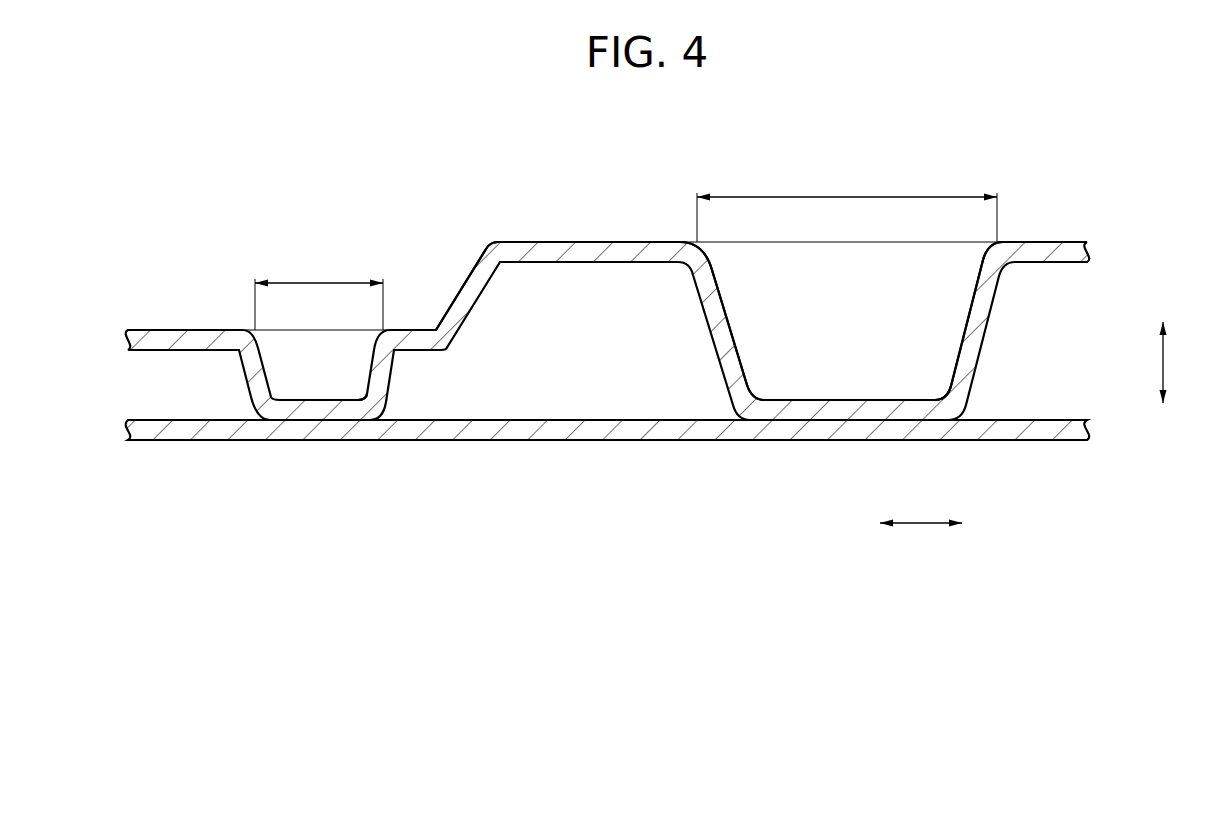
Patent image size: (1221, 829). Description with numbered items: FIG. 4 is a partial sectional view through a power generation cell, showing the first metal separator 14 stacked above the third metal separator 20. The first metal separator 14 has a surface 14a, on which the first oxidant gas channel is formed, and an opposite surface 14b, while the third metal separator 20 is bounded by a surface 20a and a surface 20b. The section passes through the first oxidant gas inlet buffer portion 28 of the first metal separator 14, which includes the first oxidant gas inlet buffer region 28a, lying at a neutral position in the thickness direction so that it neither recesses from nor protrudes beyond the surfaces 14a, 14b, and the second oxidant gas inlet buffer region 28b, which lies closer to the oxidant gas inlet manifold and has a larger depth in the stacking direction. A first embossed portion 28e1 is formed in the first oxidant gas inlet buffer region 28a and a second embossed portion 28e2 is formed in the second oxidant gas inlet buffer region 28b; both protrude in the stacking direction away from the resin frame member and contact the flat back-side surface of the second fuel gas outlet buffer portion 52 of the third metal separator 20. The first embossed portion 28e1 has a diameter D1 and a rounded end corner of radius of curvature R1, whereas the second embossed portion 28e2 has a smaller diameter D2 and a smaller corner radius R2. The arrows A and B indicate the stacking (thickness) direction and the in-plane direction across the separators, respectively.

The first metal separator 14 is at (1093, 247).
The surface of the first metal separator 14a is at (1068, 240).
The surface of the first metal separator 14b is at (1033, 262).
The third metal separator 20 is at (1092, 437).
The surface of the third metal separator 20a is at (1063, 440).
The surface of the third metal separator 20b is at (1043, 418).
The first oxidant gas inlet buffer portion 28 is at (557, 157).
The first oxidant gas inlet buffer region 28a is at (532, 242).
The second oxidant gas inlet buffer region 28b is at (425, 330).
The first embossed portion 28e1 is at (847, 408).
The second embossed portion 28e2 is at (305, 410).
The second fuel gas outlet buffer portion 52 is at (575, 433).
The radius of curvature of the first embossed portion R1 is at (952, 407).
The radius of curvature of the second embossed portion R2 is at (373, 412).
The diameter of the first embossed portion D1 is at (847, 204).
The diameter of the second embossed portion D2 is at (319, 292).
The thickness direction A is at (1172, 362).
The width direction B is at (921, 509).